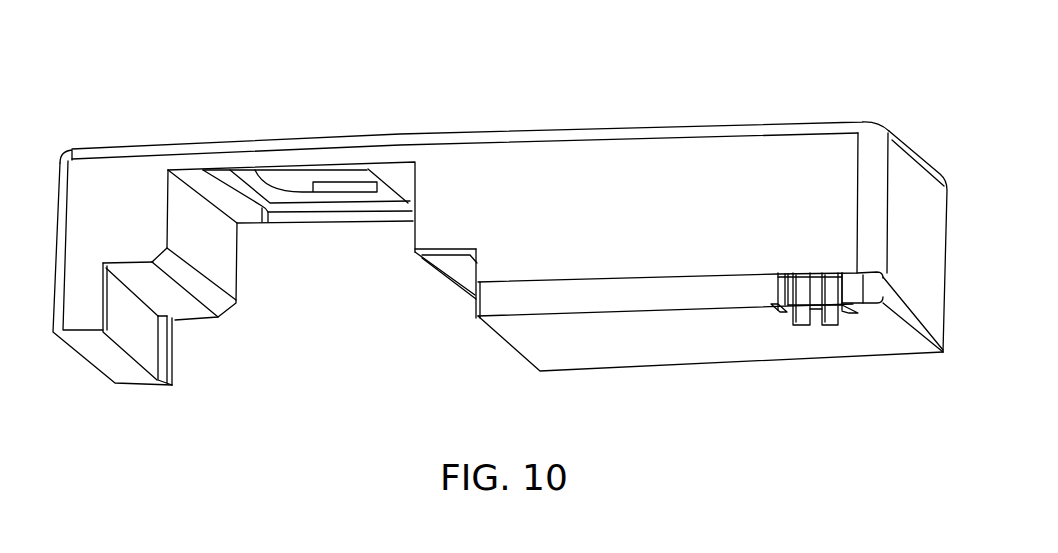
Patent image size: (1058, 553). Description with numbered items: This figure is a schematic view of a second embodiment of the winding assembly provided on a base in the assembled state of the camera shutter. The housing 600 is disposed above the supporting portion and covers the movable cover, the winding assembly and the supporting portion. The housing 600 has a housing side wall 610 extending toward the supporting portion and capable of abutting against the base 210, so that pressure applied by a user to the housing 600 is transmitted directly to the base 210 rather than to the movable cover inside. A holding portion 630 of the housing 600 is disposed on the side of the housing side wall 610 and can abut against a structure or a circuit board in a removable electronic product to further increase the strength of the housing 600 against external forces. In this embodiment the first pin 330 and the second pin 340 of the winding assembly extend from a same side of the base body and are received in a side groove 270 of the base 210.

The housing 600 is at (477, 60).
The housing side wall 610 is at (642, 158).
The holding portion 630 is at (120, 375).
The base 210 is at (578, 357).
The side groove 270 is at (783, 296).
The first pin 330 is at (800, 317).
The second pin 340 is at (832, 322).